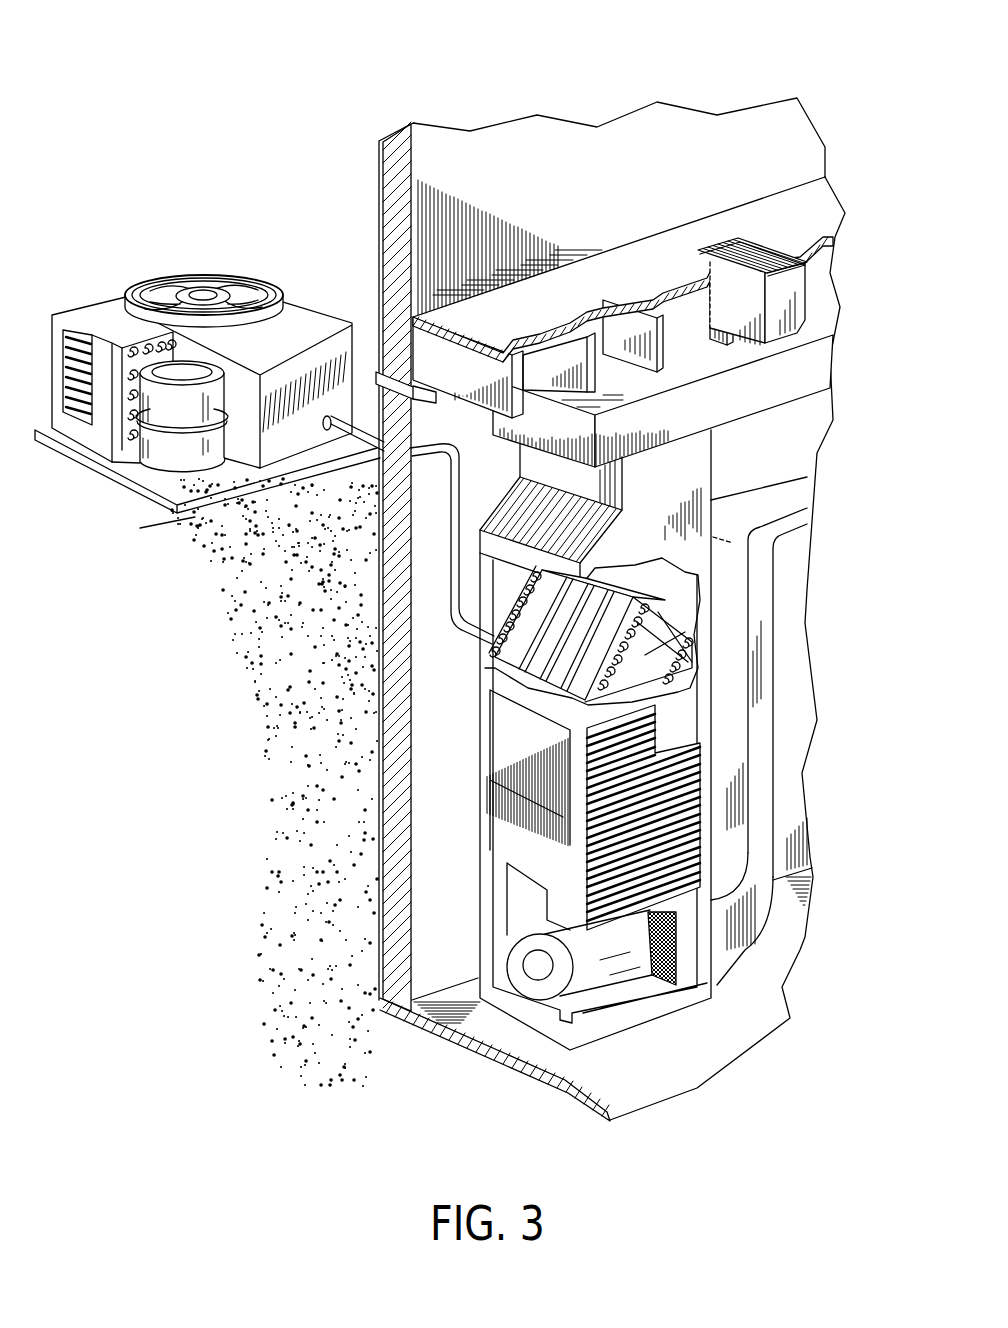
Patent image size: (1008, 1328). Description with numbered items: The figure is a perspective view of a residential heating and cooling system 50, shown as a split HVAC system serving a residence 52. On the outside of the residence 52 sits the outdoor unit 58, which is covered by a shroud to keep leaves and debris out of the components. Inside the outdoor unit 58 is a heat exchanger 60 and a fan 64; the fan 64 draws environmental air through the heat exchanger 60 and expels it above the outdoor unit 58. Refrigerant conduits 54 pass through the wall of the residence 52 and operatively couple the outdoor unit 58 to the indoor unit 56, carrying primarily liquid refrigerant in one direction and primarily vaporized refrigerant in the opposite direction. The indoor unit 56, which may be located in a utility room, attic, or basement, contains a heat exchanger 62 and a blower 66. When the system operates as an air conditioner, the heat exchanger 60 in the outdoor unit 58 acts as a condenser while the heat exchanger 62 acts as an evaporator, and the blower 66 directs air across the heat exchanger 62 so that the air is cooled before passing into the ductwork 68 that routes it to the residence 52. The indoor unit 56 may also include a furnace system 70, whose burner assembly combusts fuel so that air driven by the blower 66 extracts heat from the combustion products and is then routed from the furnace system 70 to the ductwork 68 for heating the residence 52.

The residential heating and cooling system 50 is at (203, 92).
The residence 52 is at (520, 148).
The refrigerant conduits 54 is at (452, 540).
The indoor unit 56 is at (455, 798).
The outdoor unit 58 is at (160, 266).
The heat exchanger 60 is at (130, 352).
The heat exchanger 62 is at (543, 663).
The fan 64 is at (223, 280).
The blower 66 is at (533, 972).
The ductwork 68 is at (758, 383).
The furnace system 70 is at (490, 750).